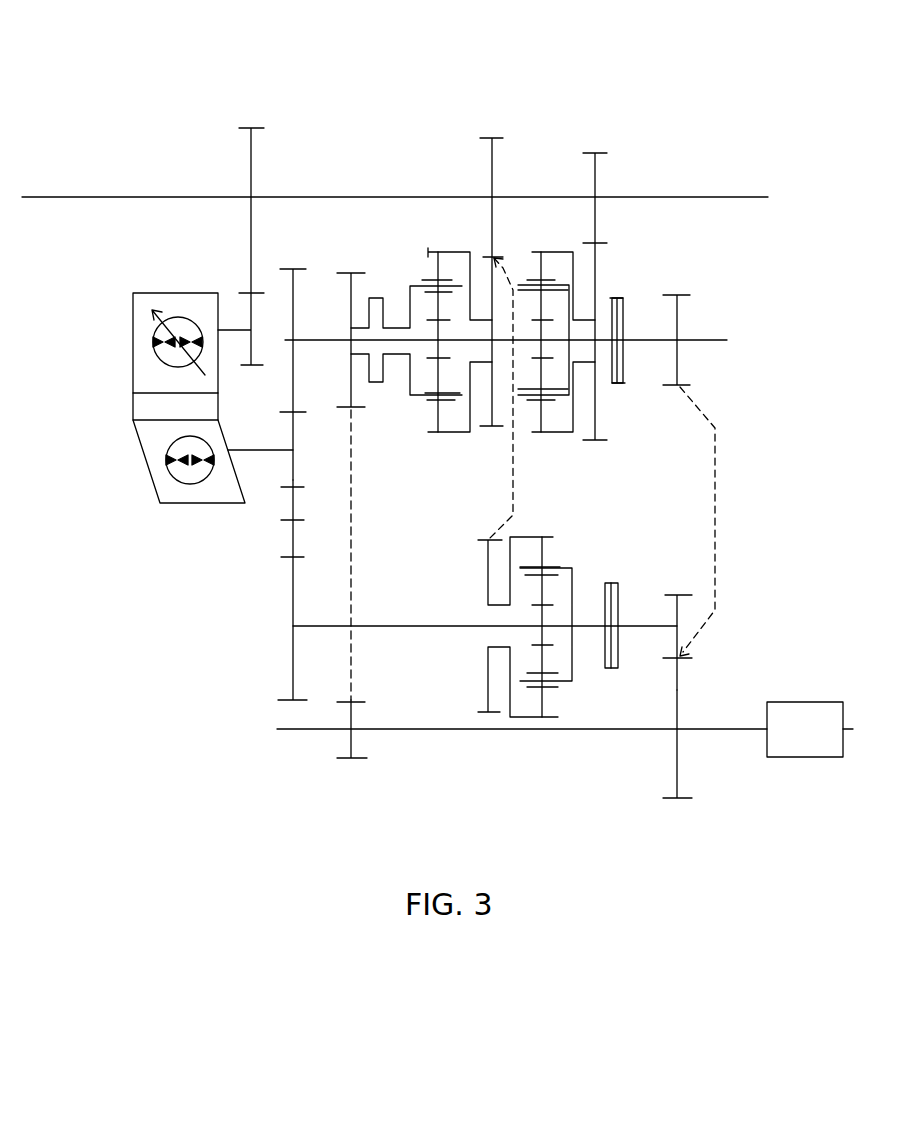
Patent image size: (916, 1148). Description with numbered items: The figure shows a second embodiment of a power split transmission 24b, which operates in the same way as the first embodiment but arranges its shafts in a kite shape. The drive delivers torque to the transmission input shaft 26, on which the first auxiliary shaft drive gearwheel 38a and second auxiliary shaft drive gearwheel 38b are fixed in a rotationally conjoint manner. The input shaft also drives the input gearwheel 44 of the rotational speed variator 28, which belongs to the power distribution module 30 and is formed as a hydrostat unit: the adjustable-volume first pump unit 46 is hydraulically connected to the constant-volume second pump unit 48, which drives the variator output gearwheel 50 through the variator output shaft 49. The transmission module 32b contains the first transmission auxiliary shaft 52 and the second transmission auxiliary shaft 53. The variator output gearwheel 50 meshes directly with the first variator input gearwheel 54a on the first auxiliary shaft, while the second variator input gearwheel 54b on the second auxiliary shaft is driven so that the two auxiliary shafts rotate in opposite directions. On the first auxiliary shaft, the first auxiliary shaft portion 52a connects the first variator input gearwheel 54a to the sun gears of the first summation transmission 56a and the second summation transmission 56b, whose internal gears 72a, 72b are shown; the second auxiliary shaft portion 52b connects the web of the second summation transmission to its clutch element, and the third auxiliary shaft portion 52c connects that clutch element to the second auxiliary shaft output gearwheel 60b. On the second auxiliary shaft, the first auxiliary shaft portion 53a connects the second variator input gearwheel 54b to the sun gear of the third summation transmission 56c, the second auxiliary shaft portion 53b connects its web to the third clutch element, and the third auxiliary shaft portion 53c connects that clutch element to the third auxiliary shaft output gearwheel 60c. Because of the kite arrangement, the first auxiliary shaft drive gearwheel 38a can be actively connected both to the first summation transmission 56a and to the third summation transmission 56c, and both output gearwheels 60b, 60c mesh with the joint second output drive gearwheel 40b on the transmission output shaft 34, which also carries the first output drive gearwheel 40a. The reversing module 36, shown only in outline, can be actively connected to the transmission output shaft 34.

The power split transmission 24b is at (791, 266).
The transmission input shaft 26 is at (112, 197).
The rotational speed variator 28 is at (133, 459).
The power distribution module 30 is at (311, 157).
The transmission module 32b is at (761, 424).
The transmission output shaft 34 is at (470, 730).
The reversing module 36 is at (797, 702).
The first auxiliary shaft drive gearwheel 38a is at (490, 167).
The second auxiliary shaft drive gearwheel 38b is at (595, 180).
The first output drive gearwheel 40a is at (350, 743).
The second output drive gearwheel 40b is at (675, 773).
The input gearwheel 44 is at (250, 160).
The first pump unit 46 is at (250, 311).
The second pump unit 48 is at (187, 507).
The variator output shaft 49 is at (264, 452).
The variator output gearwheel 50 is at (285, 438).
The first transmission auxiliary shaft 52 is at (625, 286).
The first auxiliary shaft portion 52a is at (331, 486).
The second auxiliary shaft portion 52b is at (515, 437).
The third auxiliary shaft portion 52c is at (638, 340).
The second transmission auxiliary shaft 53 is at (419, 646).
The first auxiliary shaft portion 53a is at (382, 625).
The second auxiliary shaft portion 53b is at (584, 623).
The third auxiliary shaft portion 53c is at (646, 623).
The first variator input gearwheel 54a is at (293, 315).
The second variator input gearwheel 54b is at (293, 656).
The first summation transmission 56a is at (432, 449).
The second summation transmission 56b is at (597, 455).
The third summation transmission 56c is at (604, 685).
The second auxiliary shaft output gearwheel 60b is at (677, 322).
The third auxiliary shaft output gearwheel 60c is at (678, 613).
The internal gear 72a is at (452, 250).
The internal gear 72b is at (535, 250).